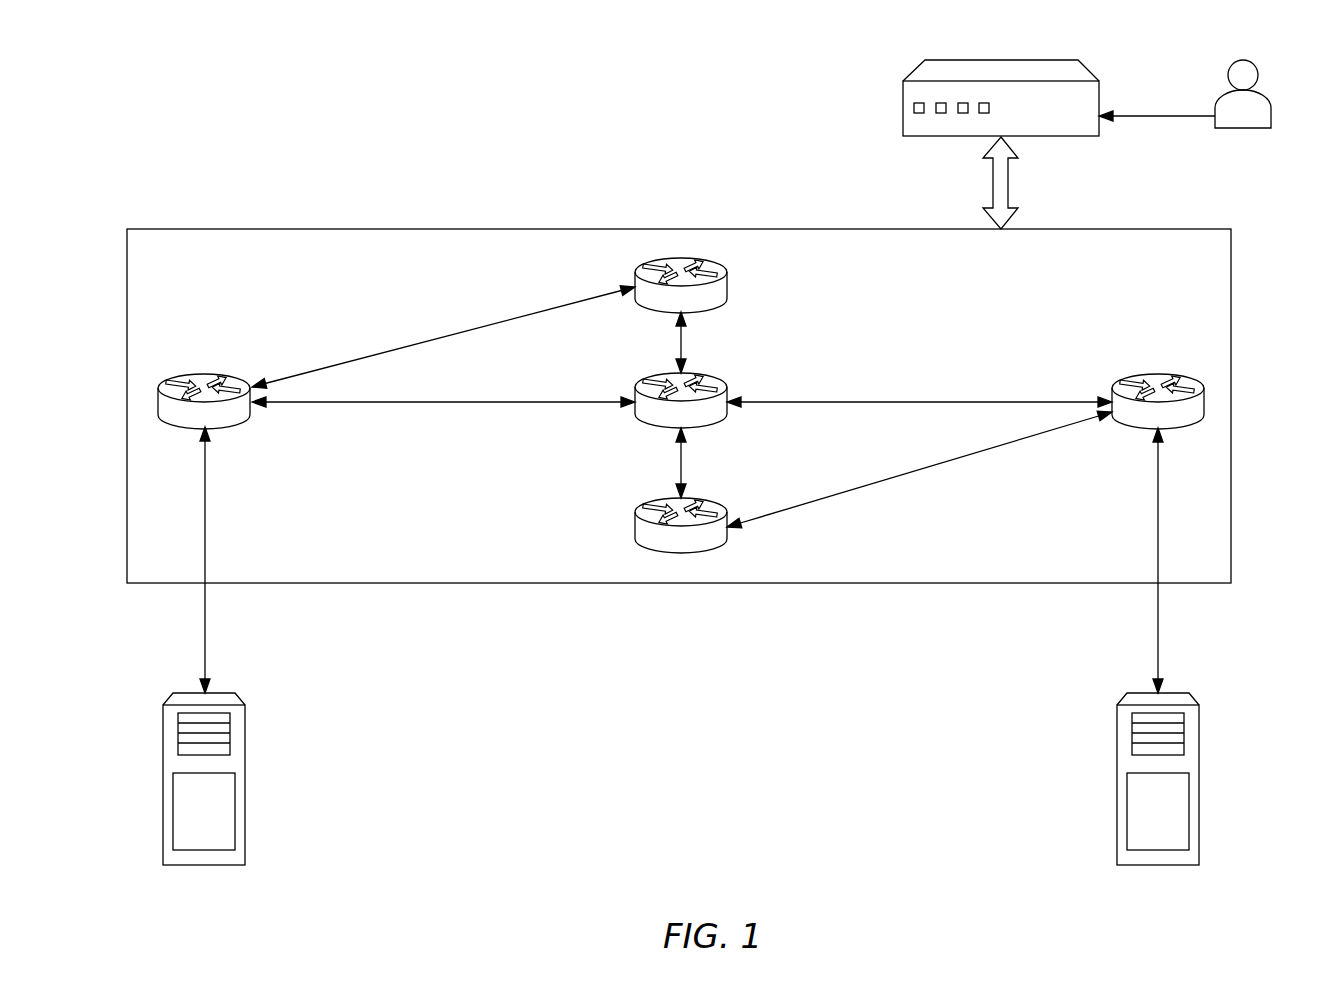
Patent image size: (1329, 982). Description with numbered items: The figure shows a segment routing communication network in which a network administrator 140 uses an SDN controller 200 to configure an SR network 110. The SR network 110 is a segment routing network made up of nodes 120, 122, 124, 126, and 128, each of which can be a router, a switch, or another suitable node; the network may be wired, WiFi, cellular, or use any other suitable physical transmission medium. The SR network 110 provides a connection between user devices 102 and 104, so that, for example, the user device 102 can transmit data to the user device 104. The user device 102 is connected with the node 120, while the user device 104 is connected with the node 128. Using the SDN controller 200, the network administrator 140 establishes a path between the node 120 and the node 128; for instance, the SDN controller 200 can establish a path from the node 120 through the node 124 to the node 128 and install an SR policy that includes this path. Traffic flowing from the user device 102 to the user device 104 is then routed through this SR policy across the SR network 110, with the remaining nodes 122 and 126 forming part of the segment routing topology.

The user device 102 is at (202, 865).
The user device 104 is at (1158, 865).
The SR network 110 is at (198, 274).
The node 120 is at (203, 375).
The node 122 is at (730, 287).
The node 124 is at (707, 375).
The node 126 is at (634, 527).
The node 128 is at (1158, 373).
The network administrator 140 is at (1247, 60).
The SDN controller 200 is at (1002, 60).